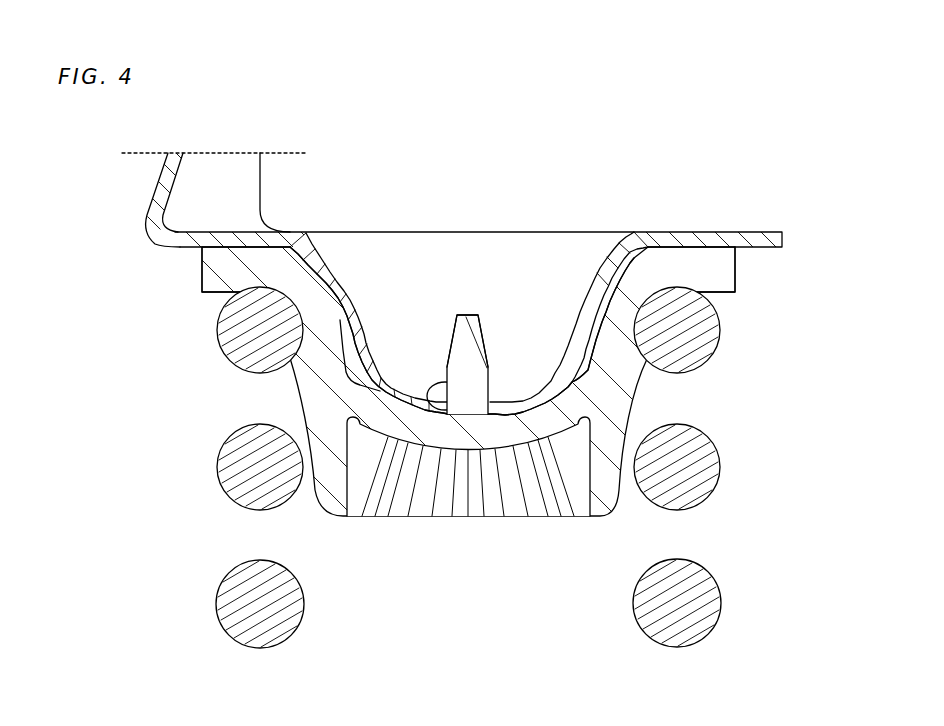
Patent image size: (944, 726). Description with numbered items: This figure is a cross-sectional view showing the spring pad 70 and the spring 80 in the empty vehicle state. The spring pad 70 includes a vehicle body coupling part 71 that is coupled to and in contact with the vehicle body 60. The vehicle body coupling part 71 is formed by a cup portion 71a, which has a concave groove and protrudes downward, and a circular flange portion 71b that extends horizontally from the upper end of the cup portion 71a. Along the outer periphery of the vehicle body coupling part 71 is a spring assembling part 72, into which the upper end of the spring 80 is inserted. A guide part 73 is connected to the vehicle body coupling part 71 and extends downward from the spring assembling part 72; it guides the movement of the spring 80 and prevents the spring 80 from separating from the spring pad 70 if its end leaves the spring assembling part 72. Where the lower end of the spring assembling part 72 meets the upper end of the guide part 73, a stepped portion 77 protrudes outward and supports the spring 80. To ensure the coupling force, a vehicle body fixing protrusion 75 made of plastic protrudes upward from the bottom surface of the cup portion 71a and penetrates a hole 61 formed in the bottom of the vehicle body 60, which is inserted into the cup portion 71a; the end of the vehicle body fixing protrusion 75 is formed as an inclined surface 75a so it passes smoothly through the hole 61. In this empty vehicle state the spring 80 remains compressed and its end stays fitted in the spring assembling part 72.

The vehicle body 60 is at (533, 262).
The hole 61 is at (432, 382).
The spring pad 70 is at (416, 517).
The vehicle body coupling part 71 is at (297, 272).
The cup portion 71a is at (523, 430).
The circular flange portion 71b is at (688, 268).
The spring assembling part 72 is at (300, 323).
The guide part 73 is at (330, 467).
The vehicle body fixing protrusion 75 is at (468, 355).
The inclined surface 75a is at (452, 336).
The stepped portion 77 is at (653, 358).
The spring 80 is at (683, 605).